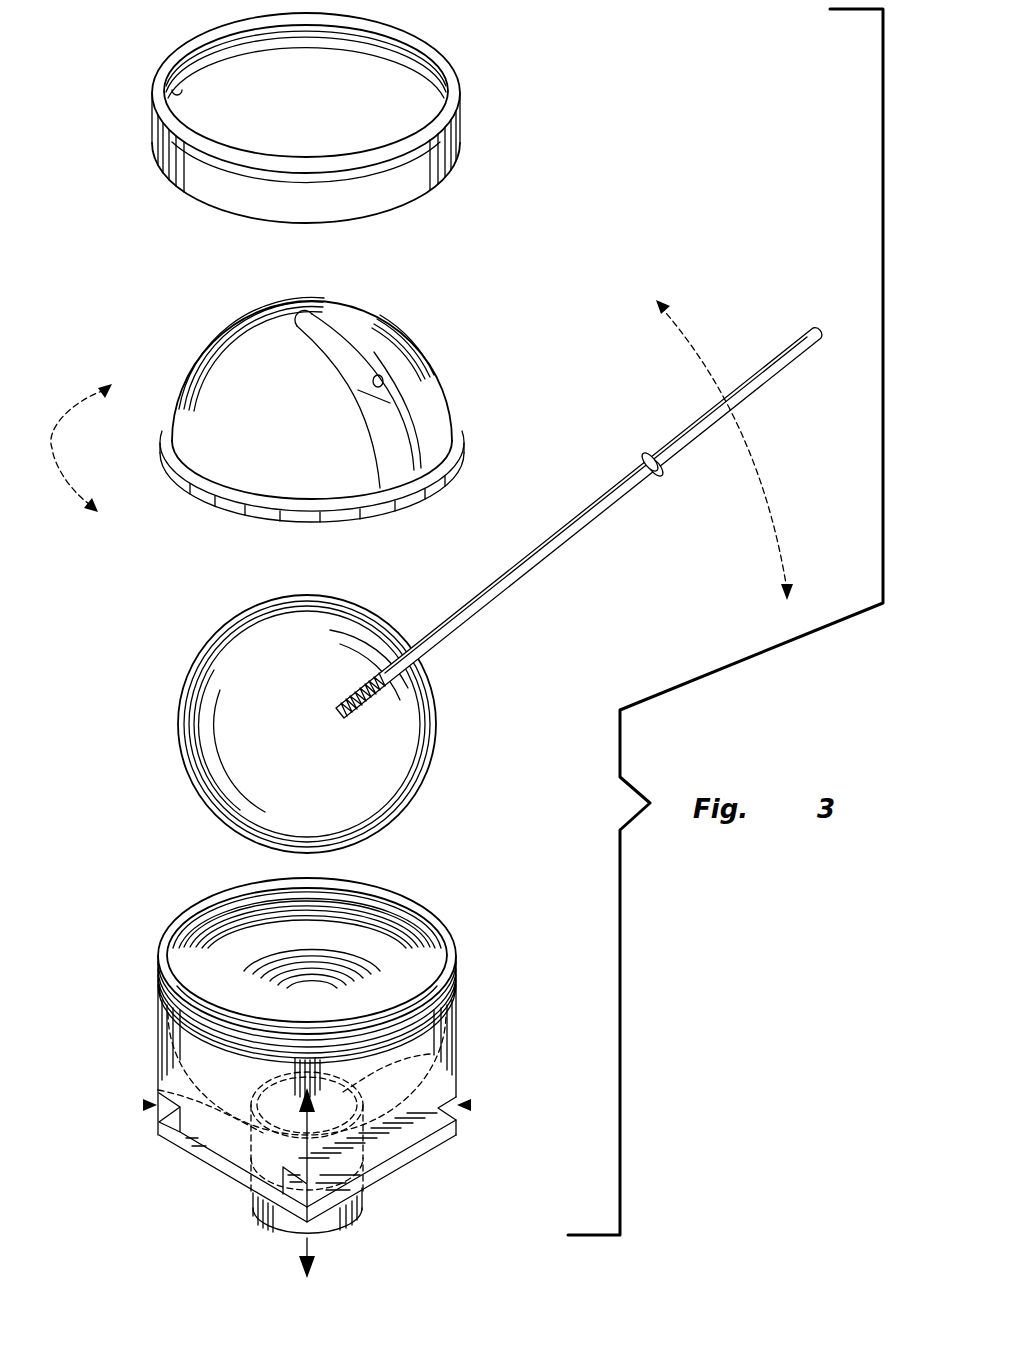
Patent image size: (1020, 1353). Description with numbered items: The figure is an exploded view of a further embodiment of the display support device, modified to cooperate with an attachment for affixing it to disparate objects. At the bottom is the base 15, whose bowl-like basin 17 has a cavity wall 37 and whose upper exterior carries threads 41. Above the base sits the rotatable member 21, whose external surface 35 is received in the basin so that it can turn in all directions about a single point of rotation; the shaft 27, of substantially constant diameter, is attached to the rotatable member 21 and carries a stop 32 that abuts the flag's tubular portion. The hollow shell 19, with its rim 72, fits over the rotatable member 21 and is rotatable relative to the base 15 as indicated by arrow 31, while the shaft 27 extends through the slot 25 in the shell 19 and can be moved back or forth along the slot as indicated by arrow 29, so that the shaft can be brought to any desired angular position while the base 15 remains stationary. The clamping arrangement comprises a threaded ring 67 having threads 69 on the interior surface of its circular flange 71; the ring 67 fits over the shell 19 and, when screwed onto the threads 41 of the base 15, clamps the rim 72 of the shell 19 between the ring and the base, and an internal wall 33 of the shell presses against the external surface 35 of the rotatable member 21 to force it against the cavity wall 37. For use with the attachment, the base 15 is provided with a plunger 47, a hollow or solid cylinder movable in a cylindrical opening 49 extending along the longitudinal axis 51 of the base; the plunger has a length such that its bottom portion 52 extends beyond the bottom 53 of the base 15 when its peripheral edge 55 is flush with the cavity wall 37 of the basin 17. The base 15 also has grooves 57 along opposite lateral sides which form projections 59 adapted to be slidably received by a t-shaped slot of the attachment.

The base 15 is at (158, 1018).
The bowl-like basin 17 is at (178, 1060).
The hollow shell 19 is at (233, 365).
The rotatable member 21 is at (213, 640).
The slot 25 is at (340, 345).
The shaft 27 is at (617, 500).
The arrow 29 is at (700, 345).
The arrow 31 is at (52, 445).
The stop 32 is at (648, 456).
The internal wall 33 is at (383, 383).
The external surface 35 is at (247, 812).
The cavity wall 37 is at (218, 973).
The threads 41 is at (158, 980).
The plunger 47 is at (380, 1137).
The cylindrical opening 49 is at (158, 1090).
The longitudinal axis 51 is at (308, 1243).
The bottom portion 52 is at (255, 1198).
The bottom 53 is at (177, 1150).
The peripheral edge 55 is at (430, 1054).
The grooves 57 is at (143, 1105).
The projections 59 is at (415, 1158).
The threaded ring 67 is at (188, 167).
The threads 69 is at (173, 86).
The circular flange 71 is at (455, 137).
The rim 72 is at (452, 442).